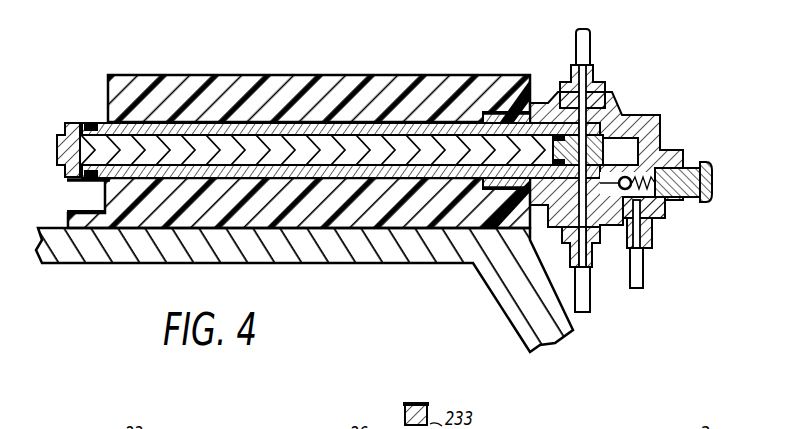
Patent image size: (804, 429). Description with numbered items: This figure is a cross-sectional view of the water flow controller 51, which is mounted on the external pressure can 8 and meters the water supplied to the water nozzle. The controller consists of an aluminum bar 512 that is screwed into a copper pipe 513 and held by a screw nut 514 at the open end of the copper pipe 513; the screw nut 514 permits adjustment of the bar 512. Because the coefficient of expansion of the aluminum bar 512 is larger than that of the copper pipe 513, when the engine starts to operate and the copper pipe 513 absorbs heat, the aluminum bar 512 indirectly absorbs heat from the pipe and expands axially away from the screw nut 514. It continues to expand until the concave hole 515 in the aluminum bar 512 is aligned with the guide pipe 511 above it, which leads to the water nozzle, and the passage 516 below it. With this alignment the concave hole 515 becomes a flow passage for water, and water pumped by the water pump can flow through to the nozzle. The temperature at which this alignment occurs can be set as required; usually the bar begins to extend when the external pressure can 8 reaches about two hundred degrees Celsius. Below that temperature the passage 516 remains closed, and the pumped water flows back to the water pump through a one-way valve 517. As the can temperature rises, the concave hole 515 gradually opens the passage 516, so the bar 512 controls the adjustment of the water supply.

The external pressure can 8 is at (53, 238).
The water flow controller 51 is at (288, 90).
The guide pipe 511 is at (598, 92).
The aluminum bar 512 is at (177, 143).
The copper pipe 513 is at (395, 126).
The screw nut 514 is at (58, 137).
The concave hole 515 is at (560, 142).
The passage 516 is at (590, 258).
The one-way valve 517 is at (665, 160).